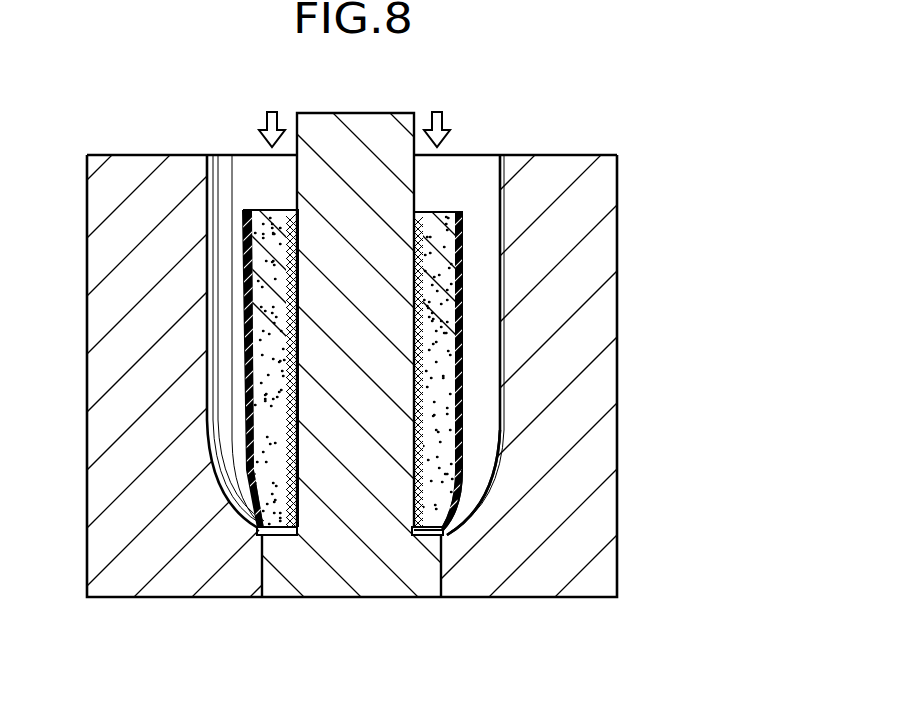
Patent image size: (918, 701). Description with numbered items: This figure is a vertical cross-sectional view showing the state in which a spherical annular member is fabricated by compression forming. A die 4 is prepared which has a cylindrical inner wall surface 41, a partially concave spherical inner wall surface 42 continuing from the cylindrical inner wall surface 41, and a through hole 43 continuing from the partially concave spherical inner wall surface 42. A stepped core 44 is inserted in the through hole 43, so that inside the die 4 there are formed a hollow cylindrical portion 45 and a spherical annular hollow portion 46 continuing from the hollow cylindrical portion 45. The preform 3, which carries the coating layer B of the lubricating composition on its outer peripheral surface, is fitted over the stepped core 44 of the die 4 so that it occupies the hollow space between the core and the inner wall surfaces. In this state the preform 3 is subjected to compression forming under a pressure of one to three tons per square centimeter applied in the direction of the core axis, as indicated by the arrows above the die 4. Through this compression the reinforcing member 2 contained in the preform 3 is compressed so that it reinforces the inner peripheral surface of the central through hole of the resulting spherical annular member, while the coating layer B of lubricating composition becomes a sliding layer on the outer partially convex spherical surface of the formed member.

The reinforcing member 2 is at (273, 222).
The preform 3 is at (257, 398).
The coating layer B is at (248, 288).
The die 4 is at (645, 311).
The cylindrical inner wall surface 41 is at (504, 248).
The partially concave spherical inner wall surface 42 is at (478, 486).
The through hole 43 is at (431, 585).
The stepped core 44 is at (351, 568).
The hollow cylindrical portion 45 is at (486, 205).
The spherical annular hollow portion 46 is at (473, 465).